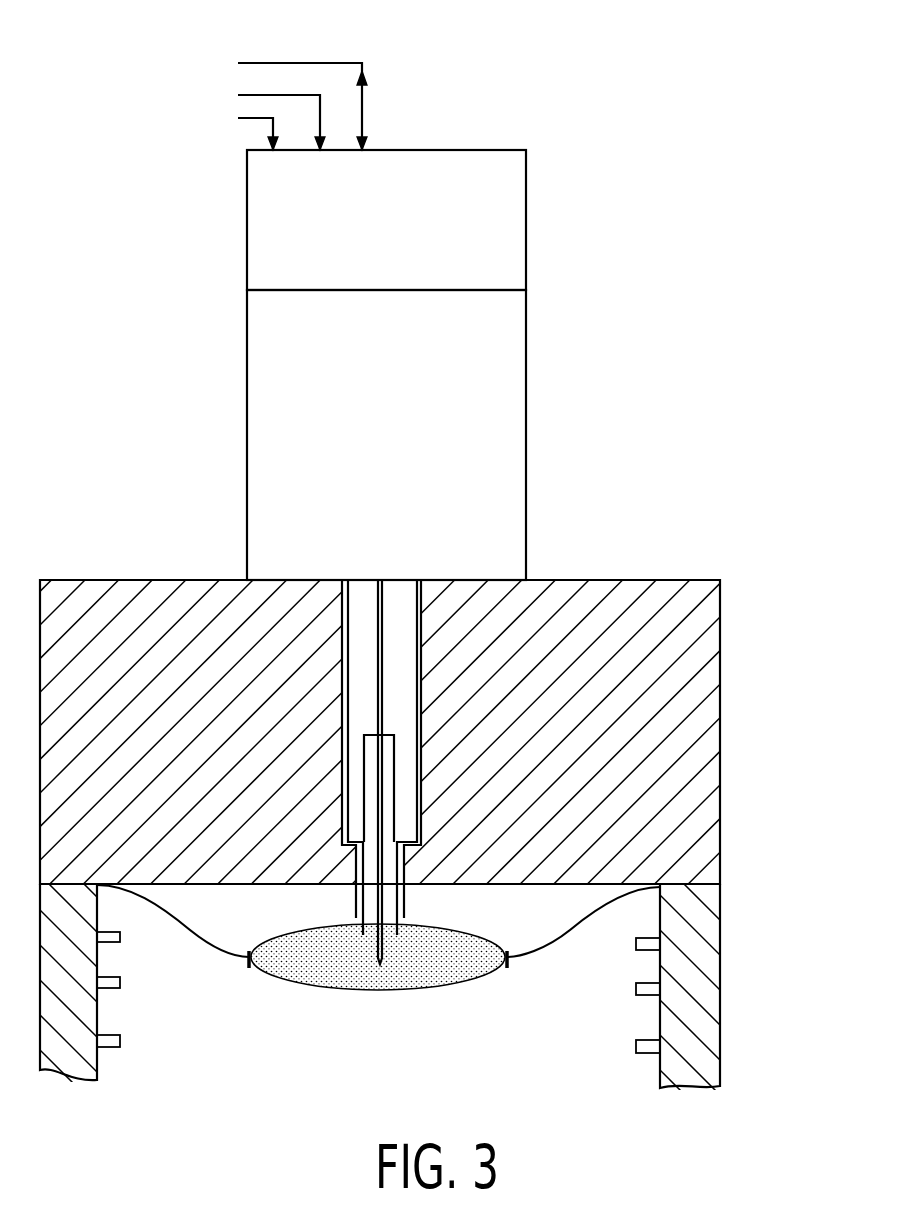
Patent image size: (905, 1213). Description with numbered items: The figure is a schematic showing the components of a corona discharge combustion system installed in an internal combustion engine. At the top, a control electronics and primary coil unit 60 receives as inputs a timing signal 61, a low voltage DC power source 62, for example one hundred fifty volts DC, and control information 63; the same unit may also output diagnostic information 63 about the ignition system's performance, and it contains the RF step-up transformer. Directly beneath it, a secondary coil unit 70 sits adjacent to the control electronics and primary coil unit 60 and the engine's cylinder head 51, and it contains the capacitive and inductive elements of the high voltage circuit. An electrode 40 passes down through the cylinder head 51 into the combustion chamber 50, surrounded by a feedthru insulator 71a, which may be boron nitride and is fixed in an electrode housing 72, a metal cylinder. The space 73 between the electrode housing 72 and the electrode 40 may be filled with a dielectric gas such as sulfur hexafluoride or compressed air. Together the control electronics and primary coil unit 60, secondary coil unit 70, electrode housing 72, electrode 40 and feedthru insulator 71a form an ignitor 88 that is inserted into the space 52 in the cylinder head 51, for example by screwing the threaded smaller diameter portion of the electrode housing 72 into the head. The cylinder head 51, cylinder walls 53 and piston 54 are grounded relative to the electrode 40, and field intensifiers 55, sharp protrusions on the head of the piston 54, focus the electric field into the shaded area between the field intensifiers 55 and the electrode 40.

The ignitor 88 is at (138, 378).
The control electronics and primary coil unit 60 is at (526, 218).
The timing signal 61 is at (250, 120).
The low voltage DC power source 62 is at (252, 95).
The control information 63 is at (252, 63).
The secondary coil unit 70 is at (526, 429).
The cylinder head 51 is at (720, 770).
The electrode housing 72 is at (343, 582).
The space 73 is at (405, 592).
The electrode 40 is at (378, 607).
The space in the cylinder head 52 is at (423, 620).
The feedthru insulator 71a is at (400, 916).
The combustion chamber 50 is at (560, 917).
The field intensifiers 55 is at (248, 958).
The cylinder walls 53 is at (720, 967).
The piston 54 is at (662, 1017).